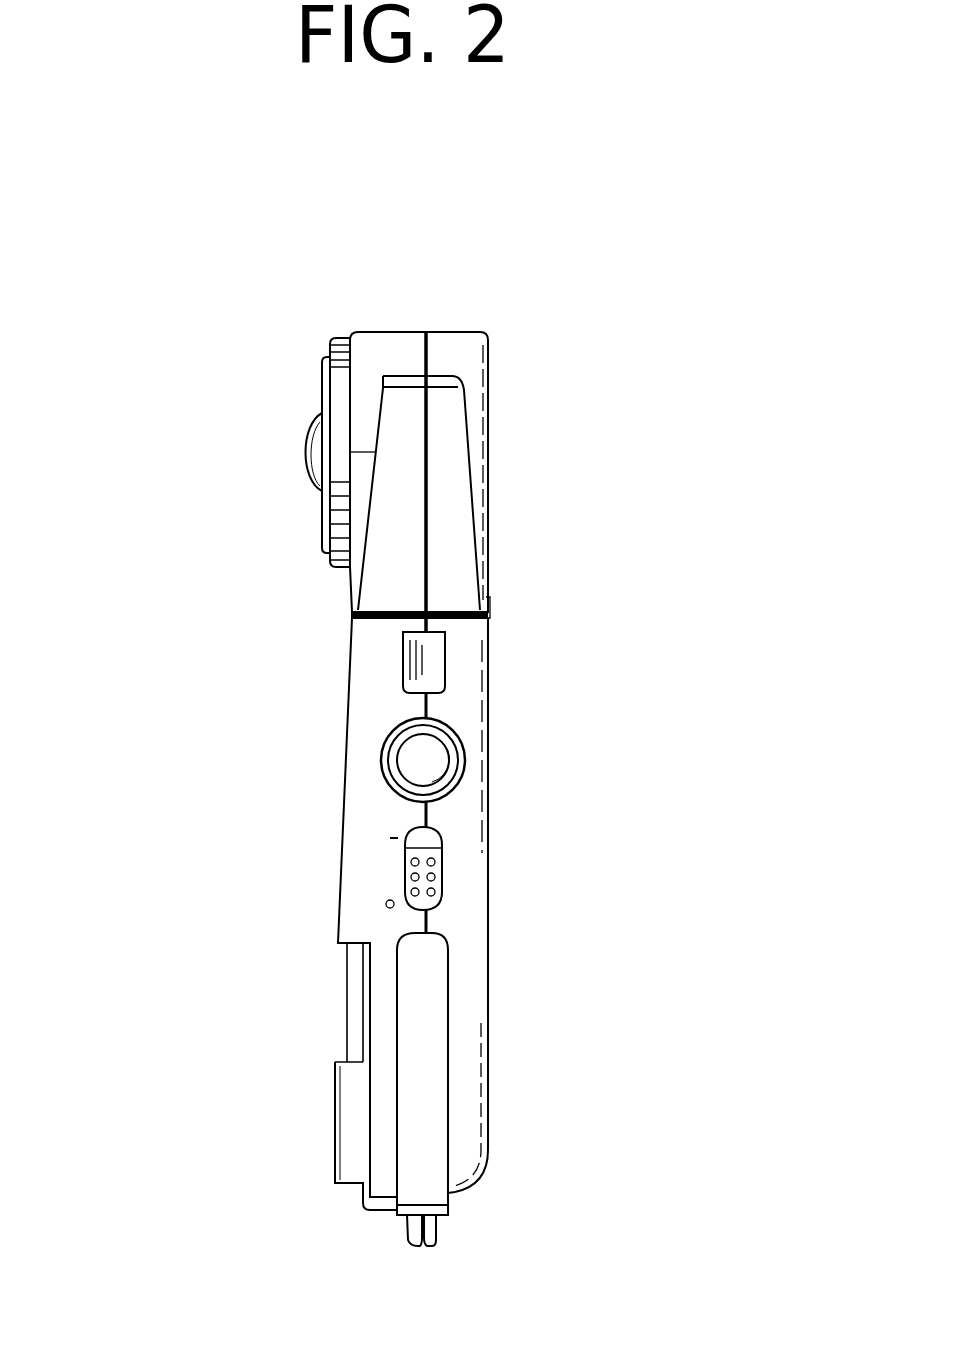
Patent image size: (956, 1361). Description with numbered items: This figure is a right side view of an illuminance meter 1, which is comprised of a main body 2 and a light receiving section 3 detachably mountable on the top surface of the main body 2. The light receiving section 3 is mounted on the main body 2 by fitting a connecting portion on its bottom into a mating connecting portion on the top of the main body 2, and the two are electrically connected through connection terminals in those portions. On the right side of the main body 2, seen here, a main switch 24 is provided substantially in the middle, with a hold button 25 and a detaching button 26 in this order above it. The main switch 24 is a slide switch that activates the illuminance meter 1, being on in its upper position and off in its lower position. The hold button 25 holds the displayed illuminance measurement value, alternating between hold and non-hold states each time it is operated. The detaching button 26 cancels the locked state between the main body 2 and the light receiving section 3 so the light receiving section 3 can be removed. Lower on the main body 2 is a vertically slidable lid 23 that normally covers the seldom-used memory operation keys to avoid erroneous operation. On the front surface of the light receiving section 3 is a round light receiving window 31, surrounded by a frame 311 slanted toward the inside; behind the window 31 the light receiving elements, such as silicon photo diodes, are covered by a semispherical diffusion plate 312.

The illuminance meter 1 is at (545, 518).
The main body 2 is at (466, 1047).
The light receiving section 3 is at (458, 348).
The lid 23 is at (336, 1108).
The main switch 24 is at (442, 876).
The hold button 25 is at (443, 763).
The detaching button 26 is at (438, 660).
The light receiving window 31 is at (288, 433).
The frame 311 is at (322, 386).
The diffusion plate 312 is at (306, 454).